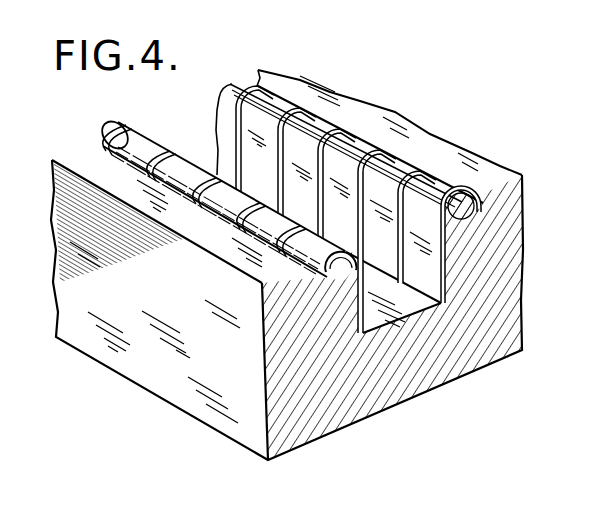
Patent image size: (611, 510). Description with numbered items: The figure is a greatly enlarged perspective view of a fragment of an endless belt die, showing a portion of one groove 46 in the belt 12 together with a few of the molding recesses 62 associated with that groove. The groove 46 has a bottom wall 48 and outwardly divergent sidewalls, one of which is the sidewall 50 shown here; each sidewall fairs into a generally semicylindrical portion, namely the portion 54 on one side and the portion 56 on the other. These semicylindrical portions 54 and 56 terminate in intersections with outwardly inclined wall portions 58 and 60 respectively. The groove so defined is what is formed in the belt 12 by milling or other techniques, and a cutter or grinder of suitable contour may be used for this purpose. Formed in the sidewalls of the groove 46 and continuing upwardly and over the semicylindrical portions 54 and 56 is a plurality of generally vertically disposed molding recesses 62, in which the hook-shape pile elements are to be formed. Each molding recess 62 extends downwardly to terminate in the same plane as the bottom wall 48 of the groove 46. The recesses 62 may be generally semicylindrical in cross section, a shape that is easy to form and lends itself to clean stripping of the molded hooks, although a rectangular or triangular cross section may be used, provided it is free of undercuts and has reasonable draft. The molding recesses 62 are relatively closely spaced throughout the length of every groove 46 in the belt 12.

The belt 12 is at (395, 388).
The groove 46 is at (195, 135).
The bottom wall 48 is at (408, 302).
The sidewall 50 is at (430, 232).
The semicylindrical portion 54 is at (438, 188).
The semicylindrical portion 56 is at (277, 220).
The outwardly inclined wall portion 58 is at (398, 150).
The outwardly inclined wall portion 60 is at (267, 324).
The molding recess 62 is at (282, 152).